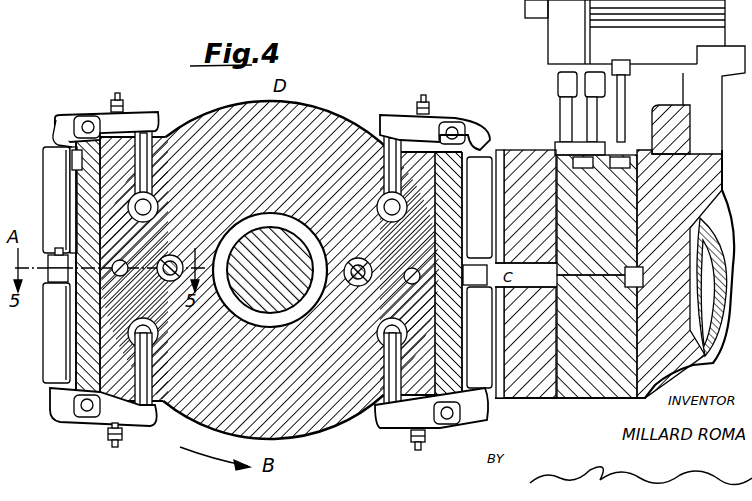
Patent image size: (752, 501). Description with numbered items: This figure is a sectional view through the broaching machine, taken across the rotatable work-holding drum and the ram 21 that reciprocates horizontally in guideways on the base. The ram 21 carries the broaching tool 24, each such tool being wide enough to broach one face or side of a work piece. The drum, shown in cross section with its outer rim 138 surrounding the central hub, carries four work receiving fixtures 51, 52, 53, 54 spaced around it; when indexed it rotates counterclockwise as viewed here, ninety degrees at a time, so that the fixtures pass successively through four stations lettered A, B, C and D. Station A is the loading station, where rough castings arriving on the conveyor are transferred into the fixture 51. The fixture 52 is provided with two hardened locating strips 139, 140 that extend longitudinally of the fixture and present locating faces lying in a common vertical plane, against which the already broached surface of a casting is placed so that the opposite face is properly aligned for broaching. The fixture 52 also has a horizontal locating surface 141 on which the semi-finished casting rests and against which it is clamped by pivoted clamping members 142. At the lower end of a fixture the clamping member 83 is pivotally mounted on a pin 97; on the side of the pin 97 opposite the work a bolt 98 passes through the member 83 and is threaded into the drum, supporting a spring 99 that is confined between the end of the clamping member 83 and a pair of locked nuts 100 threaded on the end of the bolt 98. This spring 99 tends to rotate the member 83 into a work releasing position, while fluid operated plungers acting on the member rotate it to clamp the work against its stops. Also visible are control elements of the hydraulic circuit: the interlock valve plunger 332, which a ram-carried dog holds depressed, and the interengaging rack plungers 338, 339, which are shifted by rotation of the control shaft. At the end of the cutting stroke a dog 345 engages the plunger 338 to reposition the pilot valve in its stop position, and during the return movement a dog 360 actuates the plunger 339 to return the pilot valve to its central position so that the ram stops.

The ram 21 is at (580, 393).
The broaching tool 24 is at (515, 392).
The work receiving fixture 51 is at (70, 395).
The work receiving fixture 52 is at (72, 152).
The work receiving fixture 53 is at (483, 132).
The work receiving fixture 54 is at (438, 426).
The clamping member 83 is at (72, 418).
The pin 97 is at (87, 412).
The bolt 98 is at (116, 440).
The spring 99 is at (118, 430).
The locked nuts 100 is at (113, 447).
The disc rim 138 is at (312, 112).
The hardened locating strip 139 is at (55, 212).
The hardened locating strip 140 is at (88, 120).
The horizontal locating surface 141 is at (48, 258).
The pivoted clamping member 142 is at (58, 118).
The interlock valve plunger 332 is at (625, 82).
The rack plunger 338 is at (612, 64).
The rack plunger 339 is at (562, 84).
The dog 345 is at (585, 140).
The dog 360 is at (566, 104).